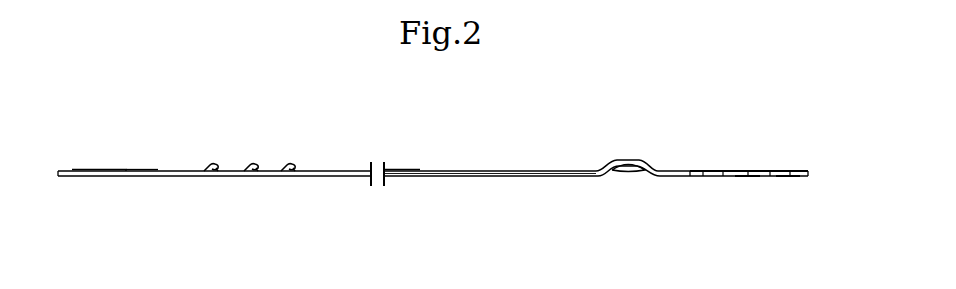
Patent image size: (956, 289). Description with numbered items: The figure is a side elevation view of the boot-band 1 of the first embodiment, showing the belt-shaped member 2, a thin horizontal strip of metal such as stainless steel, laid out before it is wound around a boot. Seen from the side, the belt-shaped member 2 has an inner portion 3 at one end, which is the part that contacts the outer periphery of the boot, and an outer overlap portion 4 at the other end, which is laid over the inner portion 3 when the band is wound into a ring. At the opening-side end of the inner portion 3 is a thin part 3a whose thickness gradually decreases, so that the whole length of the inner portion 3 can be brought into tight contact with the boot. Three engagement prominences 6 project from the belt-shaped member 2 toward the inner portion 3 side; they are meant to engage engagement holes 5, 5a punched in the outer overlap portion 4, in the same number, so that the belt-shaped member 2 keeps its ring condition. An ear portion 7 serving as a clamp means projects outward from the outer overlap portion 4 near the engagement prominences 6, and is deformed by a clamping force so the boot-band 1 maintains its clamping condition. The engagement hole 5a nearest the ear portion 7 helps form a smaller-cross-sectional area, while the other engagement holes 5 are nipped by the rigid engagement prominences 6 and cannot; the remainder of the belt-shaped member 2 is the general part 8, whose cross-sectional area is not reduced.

The boot-band 1 is at (465, 160).
The belt-shaped member 2 is at (523, 170).
The inner portion 3 is at (157, 170).
The thin part 3a is at (97, 170).
The outer overlap portion 4 is at (762, 168).
The engagement holes 5 is at (738, 178).
The engagement hole 5a is at (699, 170).
The engagement prominences 6 is at (222, 163).
The ear portion 7 is at (636, 156).
The general part 8 is at (412, 170).